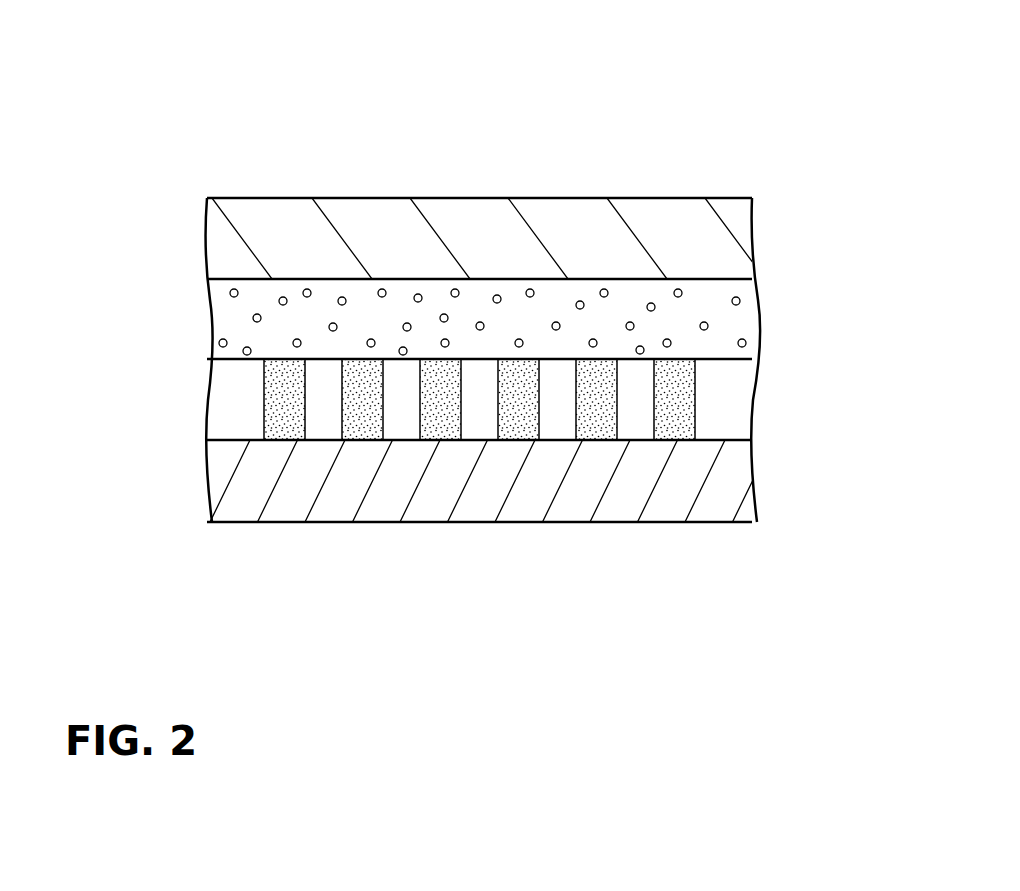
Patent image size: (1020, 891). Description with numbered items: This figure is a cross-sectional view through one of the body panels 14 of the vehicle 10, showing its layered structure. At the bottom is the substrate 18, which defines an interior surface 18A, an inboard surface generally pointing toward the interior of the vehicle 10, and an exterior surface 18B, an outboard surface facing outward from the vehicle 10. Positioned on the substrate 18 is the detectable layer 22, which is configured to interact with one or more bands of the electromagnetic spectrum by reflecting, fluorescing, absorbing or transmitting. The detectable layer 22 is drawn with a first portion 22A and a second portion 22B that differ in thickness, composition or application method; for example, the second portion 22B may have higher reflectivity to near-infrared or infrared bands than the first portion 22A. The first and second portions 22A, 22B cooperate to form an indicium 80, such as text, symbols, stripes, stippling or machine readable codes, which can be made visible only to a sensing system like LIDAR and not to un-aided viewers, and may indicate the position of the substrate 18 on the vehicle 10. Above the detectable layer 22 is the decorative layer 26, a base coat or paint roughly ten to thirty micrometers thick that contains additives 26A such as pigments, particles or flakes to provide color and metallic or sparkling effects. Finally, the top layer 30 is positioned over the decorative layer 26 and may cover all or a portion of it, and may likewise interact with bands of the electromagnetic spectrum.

The vehicle 10 is at (578, 118).
The body panel 14 is at (242, 190).
The top layer 30 is at (712, 252).
The decorative layer 26 is at (725, 322).
The additives 26A is at (251, 317).
The detectable layer 22 is at (713, 404).
The second portion 22B is at (284, 393).
The first portion 22A is at (233, 421).
The substrate 18 is at (715, 490).
The exterior surface 18B is at (320, 440).
The interior surface 18A is at (470, 522).
The indicium 80 is at (550, 444).